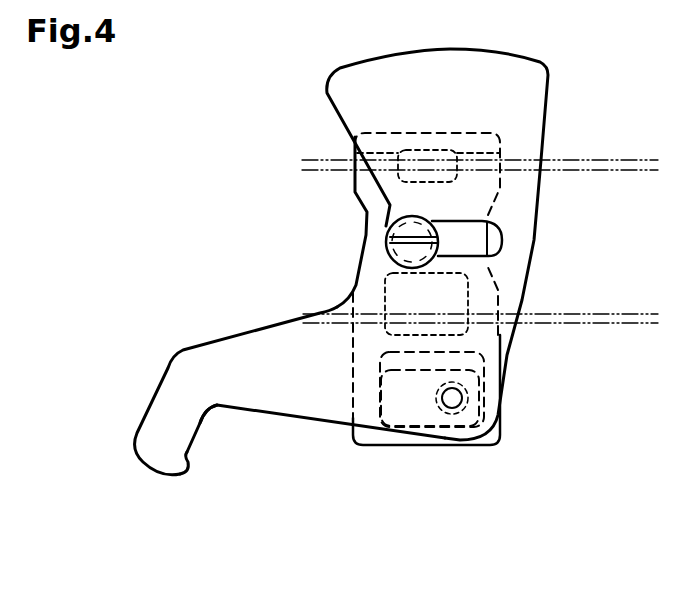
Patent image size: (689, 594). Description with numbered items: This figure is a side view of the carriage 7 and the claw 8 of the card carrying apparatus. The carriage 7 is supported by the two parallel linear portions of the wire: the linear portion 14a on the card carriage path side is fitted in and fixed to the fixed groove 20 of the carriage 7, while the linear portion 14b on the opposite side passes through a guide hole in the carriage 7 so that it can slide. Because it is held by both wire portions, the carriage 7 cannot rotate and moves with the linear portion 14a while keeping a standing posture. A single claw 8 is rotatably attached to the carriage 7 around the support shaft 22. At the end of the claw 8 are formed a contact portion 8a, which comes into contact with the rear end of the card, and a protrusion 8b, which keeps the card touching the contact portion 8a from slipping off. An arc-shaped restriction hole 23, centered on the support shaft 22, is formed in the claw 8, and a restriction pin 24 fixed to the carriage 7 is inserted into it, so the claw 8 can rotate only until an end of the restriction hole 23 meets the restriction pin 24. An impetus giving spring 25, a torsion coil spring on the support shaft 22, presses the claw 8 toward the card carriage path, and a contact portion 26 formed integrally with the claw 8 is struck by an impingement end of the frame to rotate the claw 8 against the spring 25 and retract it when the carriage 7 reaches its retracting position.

The carriage 7 is at (490, 430).
The claw 8 is at (280, 347).
The contact portion 8a is at (203, 425).
The protrusion 8b is at (187, 474).
The linear portion of the wire 14a is at (592, 313).
The linear portion of the wire 14b is at (594, 160).
The fixed groove 20 is at (383, 313).
The support shaft 22 is at (449, 408).
The restriction hole 23 is at (482, 227).
The restriction pin 24 is at (397, 228).
The impetus giving spring 25 is at (480, 385).
The contact portion 26 is at (340, 79).